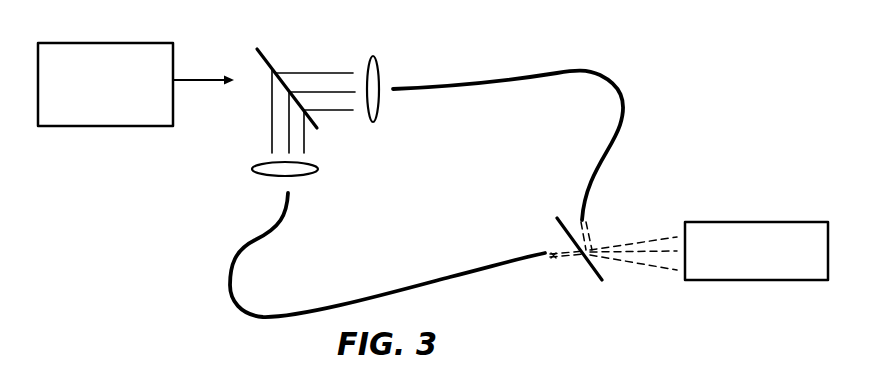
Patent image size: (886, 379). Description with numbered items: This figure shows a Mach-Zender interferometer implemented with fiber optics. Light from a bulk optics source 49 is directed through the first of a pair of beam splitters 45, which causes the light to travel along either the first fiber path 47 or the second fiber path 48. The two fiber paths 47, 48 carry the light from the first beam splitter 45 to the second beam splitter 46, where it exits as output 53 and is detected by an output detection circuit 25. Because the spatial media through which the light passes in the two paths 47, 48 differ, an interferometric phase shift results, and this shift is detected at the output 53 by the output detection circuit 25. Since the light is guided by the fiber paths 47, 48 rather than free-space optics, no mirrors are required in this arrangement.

The bulk optics source 49 is at (117, 126).
The beam splitter 45 is at (268, 61).
The fiber path 1 47 is at (563, 72).
The fiber path 2 48 is at (437, 277).
The second beam splitter 46 is at (557, 224).
The output 53 is at (668, 237).
The output detection circuit 25 is at (743, 221).